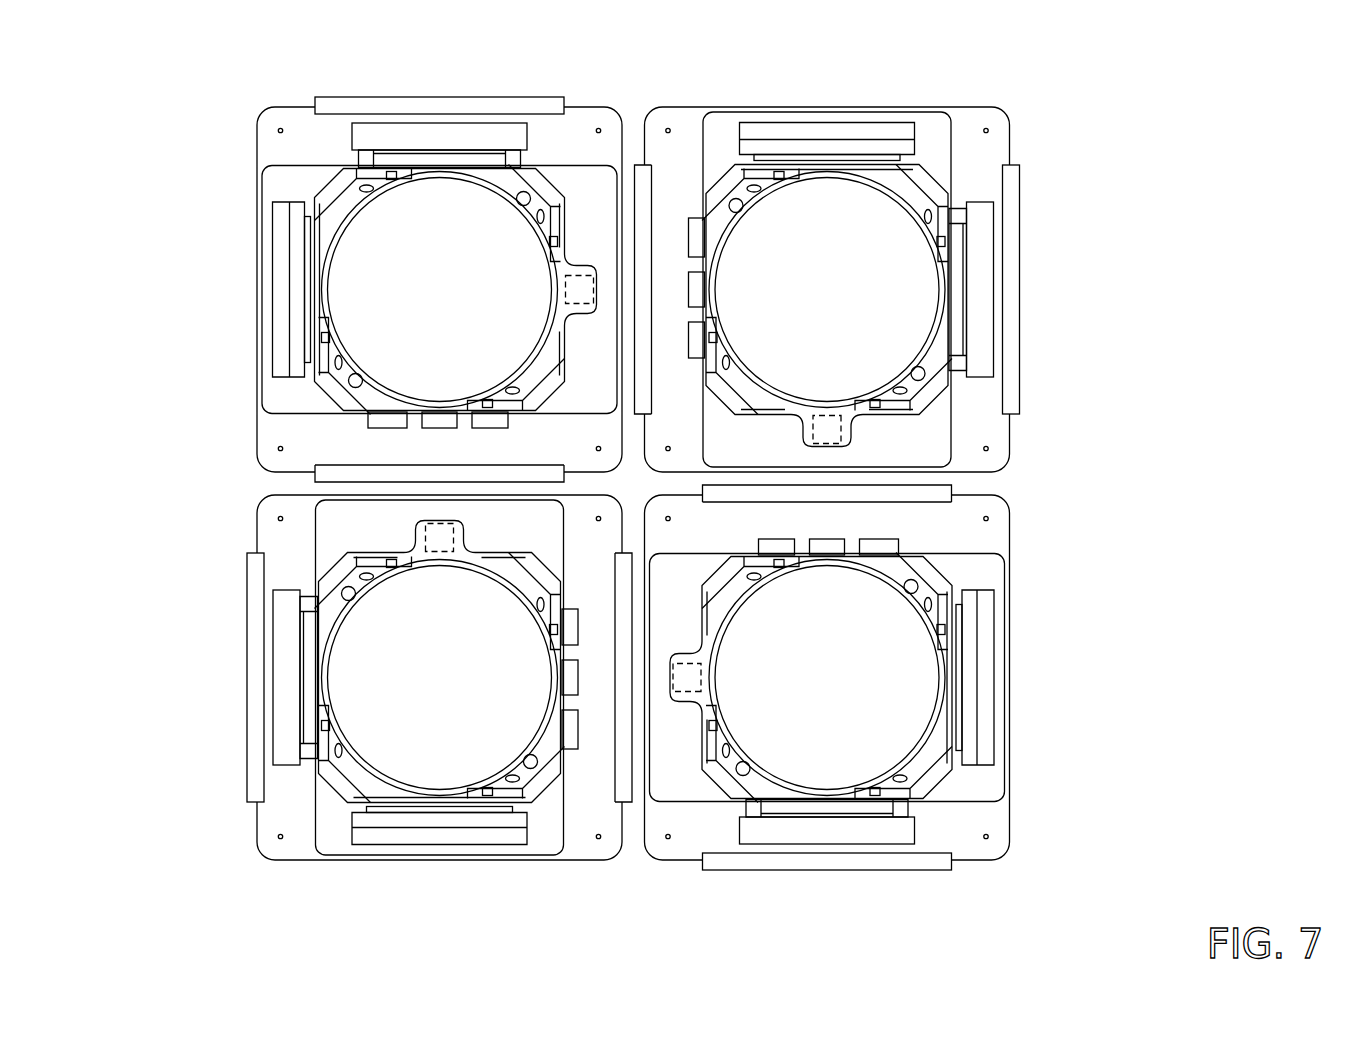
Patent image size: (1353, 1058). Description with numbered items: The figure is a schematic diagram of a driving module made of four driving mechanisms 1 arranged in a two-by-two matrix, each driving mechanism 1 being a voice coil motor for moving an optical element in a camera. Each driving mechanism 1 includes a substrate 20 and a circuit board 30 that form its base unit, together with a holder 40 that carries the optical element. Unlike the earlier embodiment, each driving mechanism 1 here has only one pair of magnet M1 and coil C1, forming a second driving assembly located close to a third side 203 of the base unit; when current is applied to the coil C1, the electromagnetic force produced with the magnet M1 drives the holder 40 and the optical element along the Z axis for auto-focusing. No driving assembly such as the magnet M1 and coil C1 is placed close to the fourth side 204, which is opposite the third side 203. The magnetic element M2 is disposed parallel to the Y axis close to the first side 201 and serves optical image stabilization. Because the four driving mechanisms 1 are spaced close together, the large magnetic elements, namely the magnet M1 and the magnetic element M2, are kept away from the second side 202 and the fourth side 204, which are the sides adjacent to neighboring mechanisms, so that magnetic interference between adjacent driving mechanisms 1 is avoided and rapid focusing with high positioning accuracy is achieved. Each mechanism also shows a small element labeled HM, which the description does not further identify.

The driving mechanism 1 is at (212, 105).
The substrate 20 is at (583, 127).
The first side 201 is at (970, 107).
The second side 202 is at (628, 247).
The third side 203 is at (294, 105).
The fourth side 204 is at (432, 487).
The circuit board 30 is at (722, 138).
The holder 40 is at (883, 168).
The magnet M1 is at (393, 140).
The magnetic element M2 is at (807, 132).
The coil C1 is at (477, 160).
The hall sensor (position sensor) HM is at (578, 290).